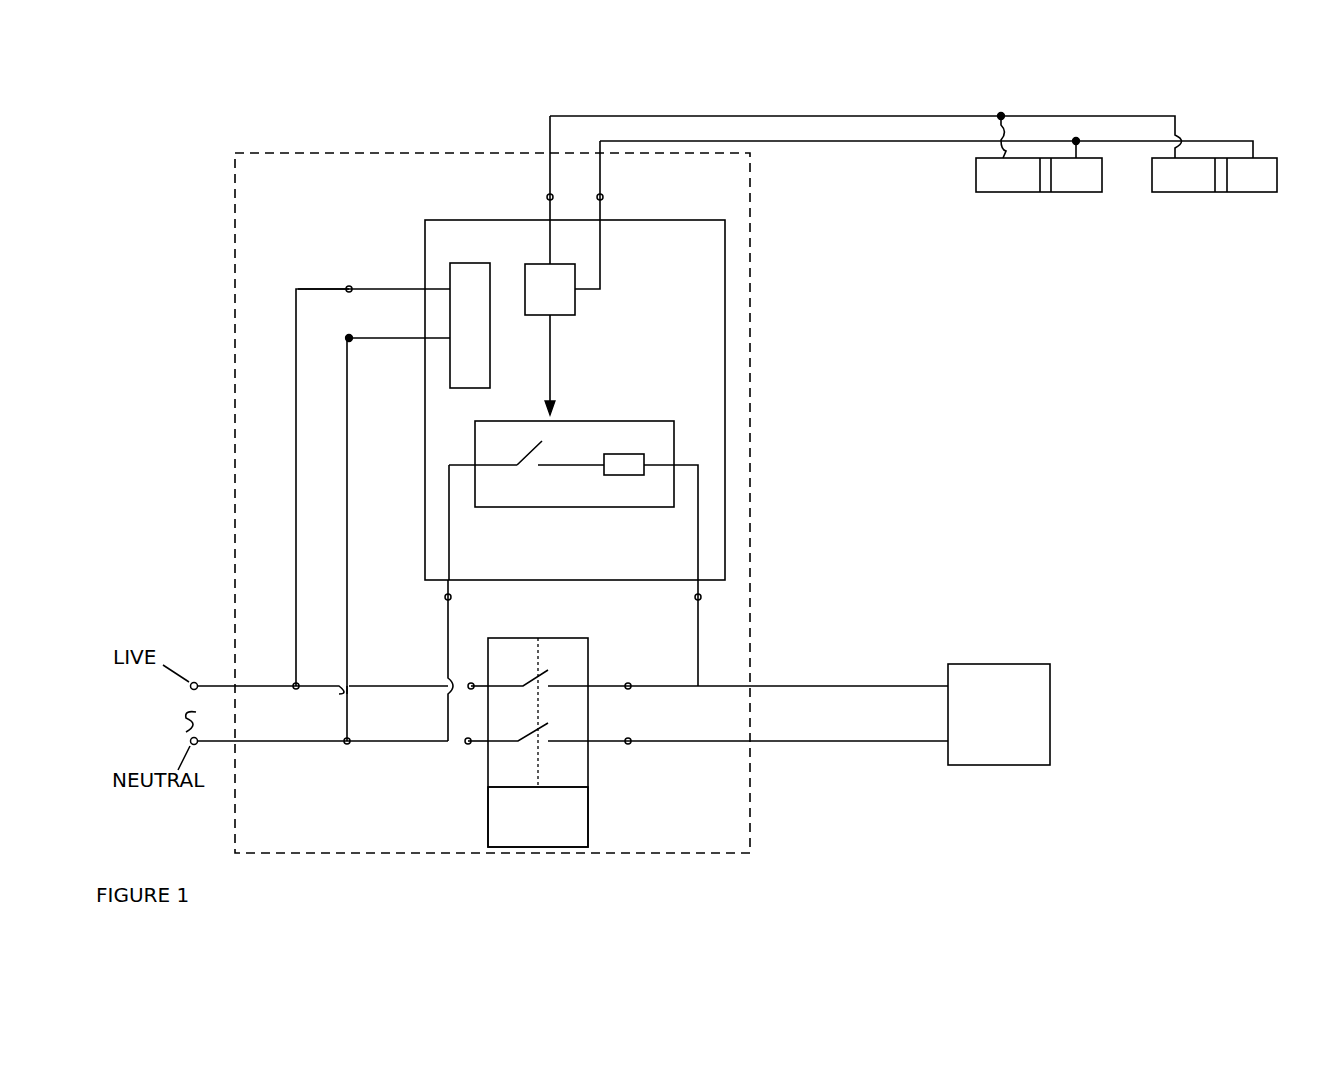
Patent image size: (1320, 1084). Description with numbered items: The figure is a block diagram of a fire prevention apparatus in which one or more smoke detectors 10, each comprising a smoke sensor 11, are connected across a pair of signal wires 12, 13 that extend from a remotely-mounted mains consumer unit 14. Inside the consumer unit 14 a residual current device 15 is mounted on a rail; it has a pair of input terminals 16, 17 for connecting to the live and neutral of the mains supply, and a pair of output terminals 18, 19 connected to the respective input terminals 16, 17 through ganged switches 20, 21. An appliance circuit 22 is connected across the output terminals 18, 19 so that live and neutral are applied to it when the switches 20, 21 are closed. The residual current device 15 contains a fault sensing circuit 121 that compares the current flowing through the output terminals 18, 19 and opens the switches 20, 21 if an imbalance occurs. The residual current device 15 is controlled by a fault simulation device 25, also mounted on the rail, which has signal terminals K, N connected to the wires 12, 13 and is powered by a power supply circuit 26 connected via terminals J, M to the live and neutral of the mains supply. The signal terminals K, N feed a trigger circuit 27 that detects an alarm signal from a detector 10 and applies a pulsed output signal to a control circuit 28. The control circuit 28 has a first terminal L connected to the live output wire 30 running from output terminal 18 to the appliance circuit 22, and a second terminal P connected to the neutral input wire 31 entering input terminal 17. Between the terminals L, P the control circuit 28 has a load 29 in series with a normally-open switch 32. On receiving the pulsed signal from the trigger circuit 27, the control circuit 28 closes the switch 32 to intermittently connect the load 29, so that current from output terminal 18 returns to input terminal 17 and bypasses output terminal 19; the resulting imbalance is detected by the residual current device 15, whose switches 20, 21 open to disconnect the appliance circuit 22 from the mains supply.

The smoke detector 10 is at (1005, 197).
The smoke sensor 11 is at (1043, 192).
The signal wire 12 is at (890, 117).
The signal wire 13 is at (815, 142).
The mains consumer unit 14 is at (751, 470).
The residual current device 15 is at (590, 768).
The input terminal 16 is at (473, 672).
The input terminal 17 is at (465, 750).
The output terminal 18 is at (630, 677).
The output terminal 19 is at (632, 746).
The ganged switch 20 is at (543, 668).
The ganged switch 21 is at (548, 727).
The appliance circuit 22 is at (1018, 768).
The fault simulation device 25 is at (725, 392).
The power supply circuit 26 is at (490, 371).
The trigger circuit 27 is at (576, 302).
The control circuit 28 is at (630, 418).
The load 29 is at (626, 475).
The live output wire 30 is at (820, 686).
The neutral input wire 31 is at (304, 749).
The normally-open switch 32 is at (528, 455).
The fault sensing circuit 121 is at (558, 835).
The terminal J is at (347, 275).
The signal terminal K is at (540, 194).
The first terminal L is at (705, 590).
The terminal M is at (349, 340).
The signal terminal N is at (610, 195).
The second terminal P is at (441, 603).